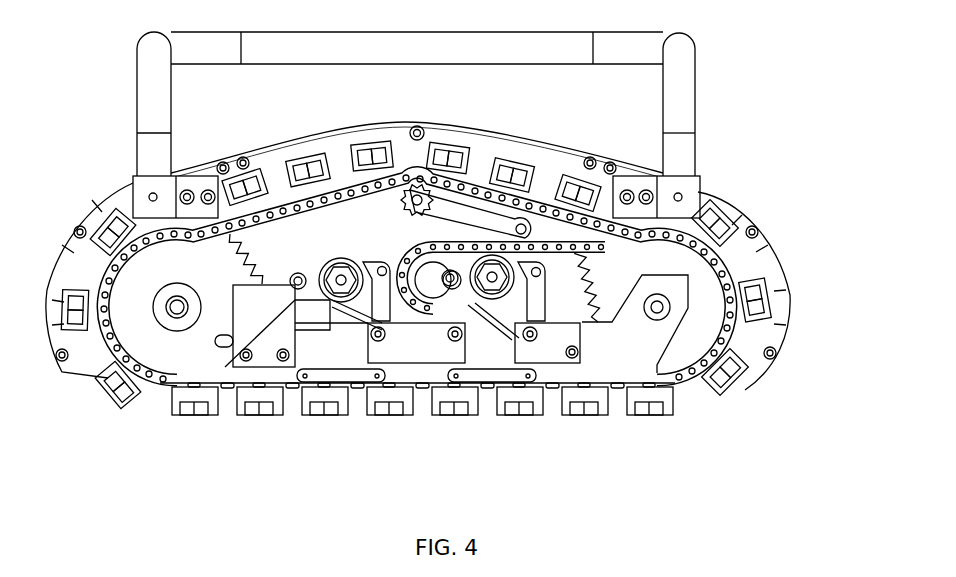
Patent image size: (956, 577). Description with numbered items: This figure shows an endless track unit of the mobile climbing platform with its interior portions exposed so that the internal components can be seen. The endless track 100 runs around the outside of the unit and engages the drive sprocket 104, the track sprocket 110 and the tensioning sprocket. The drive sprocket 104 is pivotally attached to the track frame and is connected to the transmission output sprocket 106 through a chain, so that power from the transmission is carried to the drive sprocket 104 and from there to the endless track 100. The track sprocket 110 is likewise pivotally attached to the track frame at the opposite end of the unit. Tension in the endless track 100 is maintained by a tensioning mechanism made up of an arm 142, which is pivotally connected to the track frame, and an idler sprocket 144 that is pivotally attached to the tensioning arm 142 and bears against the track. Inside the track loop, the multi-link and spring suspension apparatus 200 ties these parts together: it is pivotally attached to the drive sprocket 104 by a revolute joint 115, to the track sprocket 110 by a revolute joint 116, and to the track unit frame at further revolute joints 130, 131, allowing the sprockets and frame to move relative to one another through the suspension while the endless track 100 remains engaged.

The endless track 100 is at (692, 400).
The drive sprocket 104 is at (721, 266).
The transmission output sprocket 106 is at (447, 232).
The track sprocket 110 is at (150, 367).
The revolute joint 115 is at (676, 322).
The revolute joint 116 is at (178, 326).
The revolute joint 130 is at (331, 261).
The revolute joint 131 is at (498, 304).
The tensioning arm 142 is at (503, 203).
The idler sprocket 144 is at (417, 172).
The multi-link and spring suspension apparatus 200 is at (361, 241).